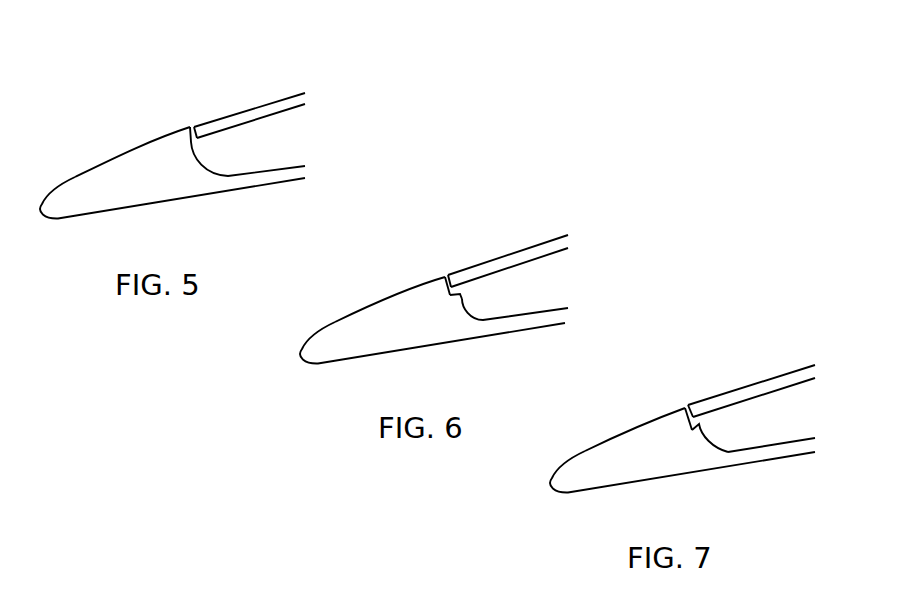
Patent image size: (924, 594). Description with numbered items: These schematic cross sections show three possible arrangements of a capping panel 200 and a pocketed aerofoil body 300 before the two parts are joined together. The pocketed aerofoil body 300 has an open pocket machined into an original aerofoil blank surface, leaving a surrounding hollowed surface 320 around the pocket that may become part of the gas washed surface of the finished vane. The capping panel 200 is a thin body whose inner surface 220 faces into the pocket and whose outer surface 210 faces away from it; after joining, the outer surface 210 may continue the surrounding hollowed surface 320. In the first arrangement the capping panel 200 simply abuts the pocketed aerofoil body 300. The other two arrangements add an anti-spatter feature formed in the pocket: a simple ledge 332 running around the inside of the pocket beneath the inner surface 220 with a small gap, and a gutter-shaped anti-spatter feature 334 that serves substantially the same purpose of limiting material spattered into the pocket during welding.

In FIG. 5, the capping panel 200 is at (253, 93).
In FIG. 6, the capping panel 200 is at (512, 283).
In FIG. 7, the capping panel 200 is at (756, 412).
In FIG. 5, the outer surface 210 is at (245, 108).
In FIG. 6, the outer surface 210 is at (507, 252).
In FIG. 7, the outer surface 210 is at (755, 380).
In FIG. 6, the inner surface 220 is at (490, 274).
In FIG. 7, the inner surface 220 is at (738, 402).
In FIG. 5, the pocketed aerofoil body 300 is at (168, 157).
In FIG. 6, the pocketed aerofoil body 300 is at (434, 313).
In FIG. 7, the pocketed aerofoil body 300 is at (682, 442).
In FIG. 5, the surrounding hollowed surface 320 is at (145, 142).
In FIG. 6, the surrounding hollowed surface 320 is at (423, 280).
In FIG. 7, the surrounding hollowed surface 320 is at (670, 410).
In FIG. 6, the ledge 332 is at (460, 299).
In FIG. 7, the anti-spatter feature 334 is at (700, 430).